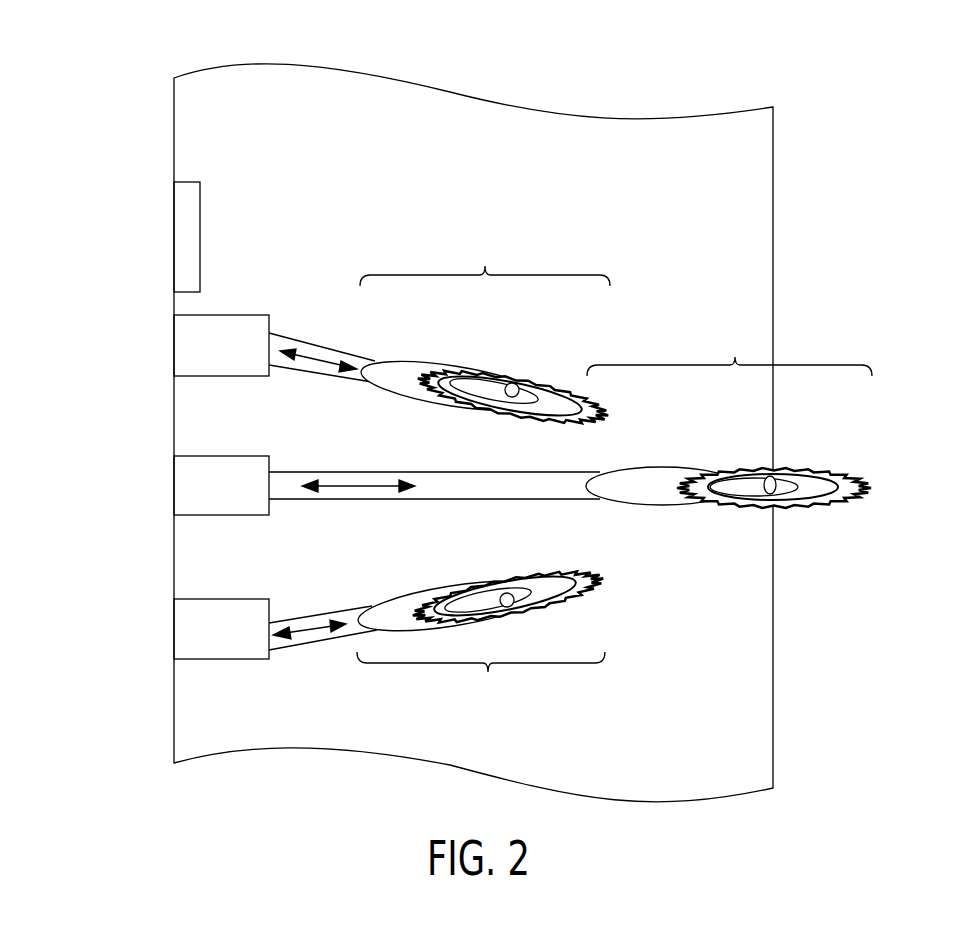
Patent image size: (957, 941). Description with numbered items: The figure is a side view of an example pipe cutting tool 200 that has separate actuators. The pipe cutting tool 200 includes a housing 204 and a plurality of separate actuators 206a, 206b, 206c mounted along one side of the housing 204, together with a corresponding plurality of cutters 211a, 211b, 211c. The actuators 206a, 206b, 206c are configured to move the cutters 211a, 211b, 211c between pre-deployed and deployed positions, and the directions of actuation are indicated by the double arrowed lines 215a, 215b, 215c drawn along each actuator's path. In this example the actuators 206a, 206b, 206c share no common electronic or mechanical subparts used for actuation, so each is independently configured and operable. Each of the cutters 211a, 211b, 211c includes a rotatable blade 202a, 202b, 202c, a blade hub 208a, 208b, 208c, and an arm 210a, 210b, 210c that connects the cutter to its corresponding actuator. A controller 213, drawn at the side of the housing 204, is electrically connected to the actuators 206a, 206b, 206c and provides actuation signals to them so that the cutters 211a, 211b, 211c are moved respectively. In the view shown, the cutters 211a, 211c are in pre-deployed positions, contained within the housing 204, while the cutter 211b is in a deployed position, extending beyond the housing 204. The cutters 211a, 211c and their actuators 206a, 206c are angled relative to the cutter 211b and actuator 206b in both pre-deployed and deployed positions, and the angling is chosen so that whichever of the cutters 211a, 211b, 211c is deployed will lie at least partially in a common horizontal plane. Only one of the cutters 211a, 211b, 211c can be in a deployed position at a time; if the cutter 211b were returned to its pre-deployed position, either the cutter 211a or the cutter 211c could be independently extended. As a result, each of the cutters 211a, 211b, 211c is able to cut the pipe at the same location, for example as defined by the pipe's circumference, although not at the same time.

The pipe cutting tool 200 is at (119, 113).
The housing 204 is at (174, 722).
The controller 213 is at (184, 242).
The actuator 206a is at (193, 346).
The actuator 206b is at (193, 487).
The actuator 206c is at (193, 632).
The double arrowed line 215a is at (317, 360).
The double arrowed line 215b is at (365, 484).
The double arrowed line 215c is at (315, 628).
The arm 210a is at (403, 357).
The arm 210b is at (650, 466).
The arm 210c is at (413, 592).
The rotatable blade 202a is at (573, 392).
The rotatable blade 202b is at (820, 470).
The rotatable blade 202c is at (583, 575).
The blade hub 208a is at (510, 383).
The blade hub 208b is at (768, 478).
The blade hub 208c is at (506, 593).
The cutter 211a is at (485, 257).
The cutter 211b is at (729, 348).
The cutter 211c is at (481, 683).